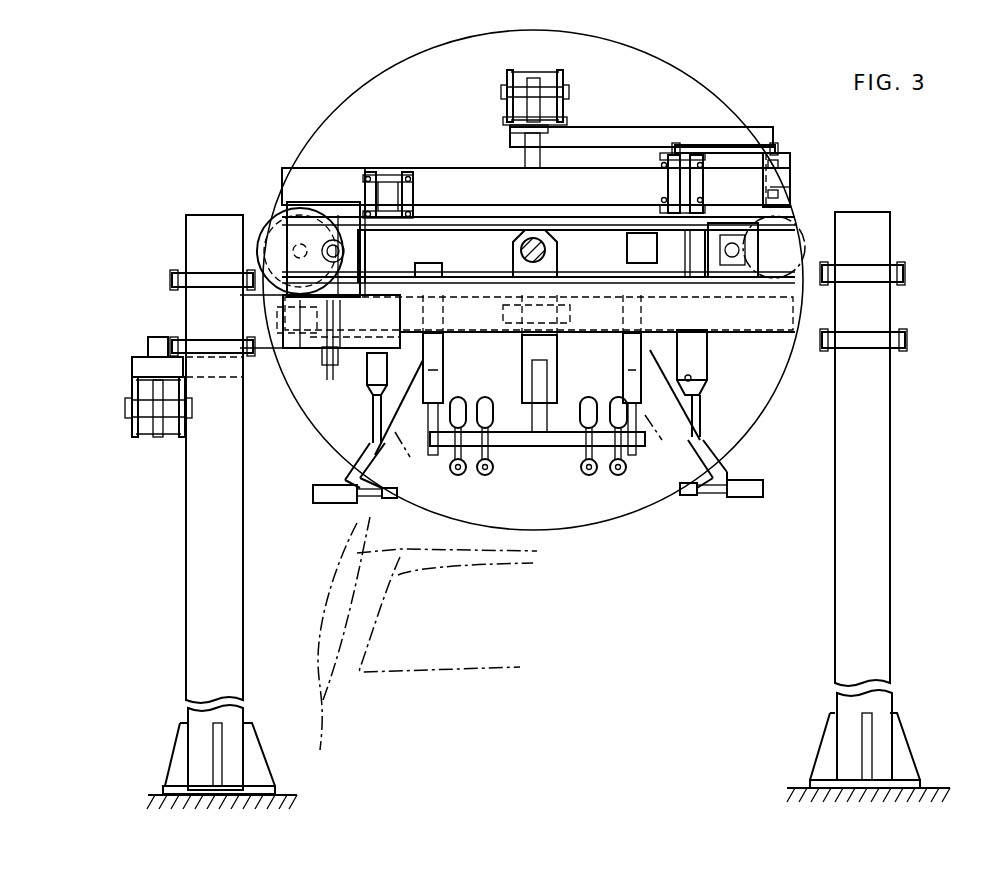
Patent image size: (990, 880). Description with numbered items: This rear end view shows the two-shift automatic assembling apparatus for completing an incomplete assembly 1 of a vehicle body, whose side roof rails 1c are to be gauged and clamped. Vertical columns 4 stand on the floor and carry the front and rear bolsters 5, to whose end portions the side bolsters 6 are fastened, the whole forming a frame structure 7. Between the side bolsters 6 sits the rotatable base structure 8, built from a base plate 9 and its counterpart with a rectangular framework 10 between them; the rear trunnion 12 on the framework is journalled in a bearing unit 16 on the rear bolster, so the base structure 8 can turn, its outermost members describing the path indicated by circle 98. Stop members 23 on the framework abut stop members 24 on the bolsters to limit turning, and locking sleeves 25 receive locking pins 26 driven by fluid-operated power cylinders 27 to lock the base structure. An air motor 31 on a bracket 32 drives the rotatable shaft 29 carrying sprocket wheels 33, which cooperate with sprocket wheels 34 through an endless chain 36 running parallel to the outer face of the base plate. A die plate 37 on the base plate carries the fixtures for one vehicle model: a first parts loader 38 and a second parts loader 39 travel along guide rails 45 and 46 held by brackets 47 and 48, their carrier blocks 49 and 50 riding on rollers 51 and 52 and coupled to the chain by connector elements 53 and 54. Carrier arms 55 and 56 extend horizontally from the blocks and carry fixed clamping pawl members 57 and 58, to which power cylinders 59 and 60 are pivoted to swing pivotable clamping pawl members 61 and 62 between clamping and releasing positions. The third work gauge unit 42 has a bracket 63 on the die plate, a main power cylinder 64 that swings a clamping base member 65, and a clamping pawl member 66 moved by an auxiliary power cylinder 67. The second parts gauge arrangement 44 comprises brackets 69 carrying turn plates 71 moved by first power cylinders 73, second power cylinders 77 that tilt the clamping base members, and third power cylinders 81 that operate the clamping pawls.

The incomplete assembly 1 is at (337, 568).
The side roof rails 1c is at (531, 432).
The vertical columns 4 is at (188, 565).
The front and rear bolsters 5 is at (255, 372).
The side bolsters 6 is at (186, 245).
The frame structure 7 is at (185, 635).
The rotatable base structure 8 is at (640, 217).
The base plate 9 is at (627, 229).
The rectangular framework 10 is at (595, 224).
The rear trunnion 12 is at (530, 239).
The bearing unit 16 is at (513, 243).
The stop members 23 is at (690, 240).
The stop members 24 is at (445, 272).
The locking sleeves 25 is at (338, 228).
The locking pins 26 is at (748, 250).
The fluid-operated power cylinders 27 is at (748, 238).
The rotatable shaft 29 is at (290, 252).
The air motor 31 is at (284, 200).
The bracket 32 is at (322, 205).
The sprocket wheels 33 is at (262, 222).
The sprocket wheels 34 is at (800, 212).
The endless chain 36 is at (470, 207).
The die plate 37 is at (560, 229).
The first parts loader 38 is at (160, 445).
The second parts loader 39 is at (385, 276).
The third work gauge units 42 is at (342, 468).
The second parts gauge arrangement 44 is at (553, 447).
The guide rail 45 is at (362, 168).
The guide rail 46 is at (351, 251).
The brackets 47 is at (392, 176).
The brackets 48 is at (540, 215).
The carrier block 49 is at (735, 145).
The carrier block 50 is at (516, 251).
The rollers 51 is at (778, 168).
The rollers 52 is at (544, 230).
The connector element 53 is at (770, 187).
The connector element 54 is at (617, 219).
The carrier arm 55 is at (132, 366).
The carrier arm 56 is at (411, 236).
The fixed clamping pawl members 57 is at (132, 400).
The fixed clamping pawl members 58 is at (311, 241).
The fluid-operated power cylinder 59 is at (155, 337).
The fluid-operated power cylinder 60 is at (323, 241).
The pivotable clamping pawl member 61 is at (152, 425).
The pivotable clamping pawl member 62 is at (317, 256).
The bracket 63 is at (430, 345).
The fluid-operated main power cylinder 64 is at (369, 378).
The clamping base member 65 is at (352, 462).
The clamping pawl member 66 is at (397, 470).
The fluid-operated auxiliary power cylinder 67 is at (335, 503).
The brackets 69 is at (522, 339).
The turn plates 71 is at (442, 452).
The fluid-operated first power cylinders 73 is at (535, 368).
The fluid-operated second power cylinders 77 is at (485, 476).
The fluid-operated third power cylinders 81 is at (493, 398).
The circle 98 is at (598, 527).